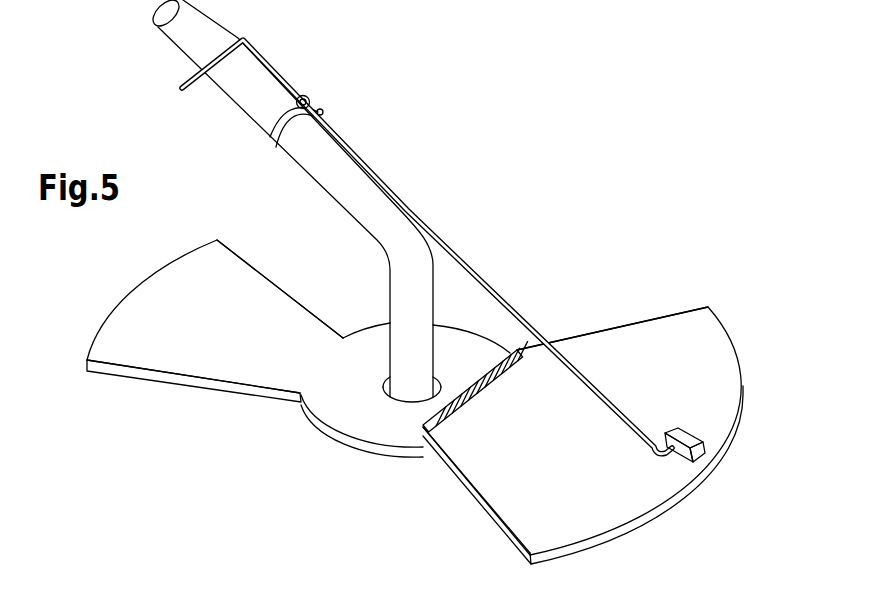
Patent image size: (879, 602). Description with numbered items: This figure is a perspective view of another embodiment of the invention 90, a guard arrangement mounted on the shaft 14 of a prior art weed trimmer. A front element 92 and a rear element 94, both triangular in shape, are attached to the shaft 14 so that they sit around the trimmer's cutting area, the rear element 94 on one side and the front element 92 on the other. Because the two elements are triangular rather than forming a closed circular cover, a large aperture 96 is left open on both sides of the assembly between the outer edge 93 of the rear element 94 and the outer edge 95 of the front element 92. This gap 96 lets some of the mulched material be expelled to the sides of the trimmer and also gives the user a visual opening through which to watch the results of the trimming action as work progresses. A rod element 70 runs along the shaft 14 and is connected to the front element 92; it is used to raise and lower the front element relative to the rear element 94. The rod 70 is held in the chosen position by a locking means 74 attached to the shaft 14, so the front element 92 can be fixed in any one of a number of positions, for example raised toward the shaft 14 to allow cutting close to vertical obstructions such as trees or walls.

The shaft 14 is at (188, 42).
The rod element 70 is at (440, 237).
The locking means 74 is at (273, 137).
The invention embodiment 90 is at (423, 390).
The front element 92 is at (570, 413).
The outer edge of the rear element 93 is at (260, 273).
The rear element 94 is at (206, 325).
The outer edge of the front element 95 is at (609, 327).
The aperture 96 is at (550, 238).